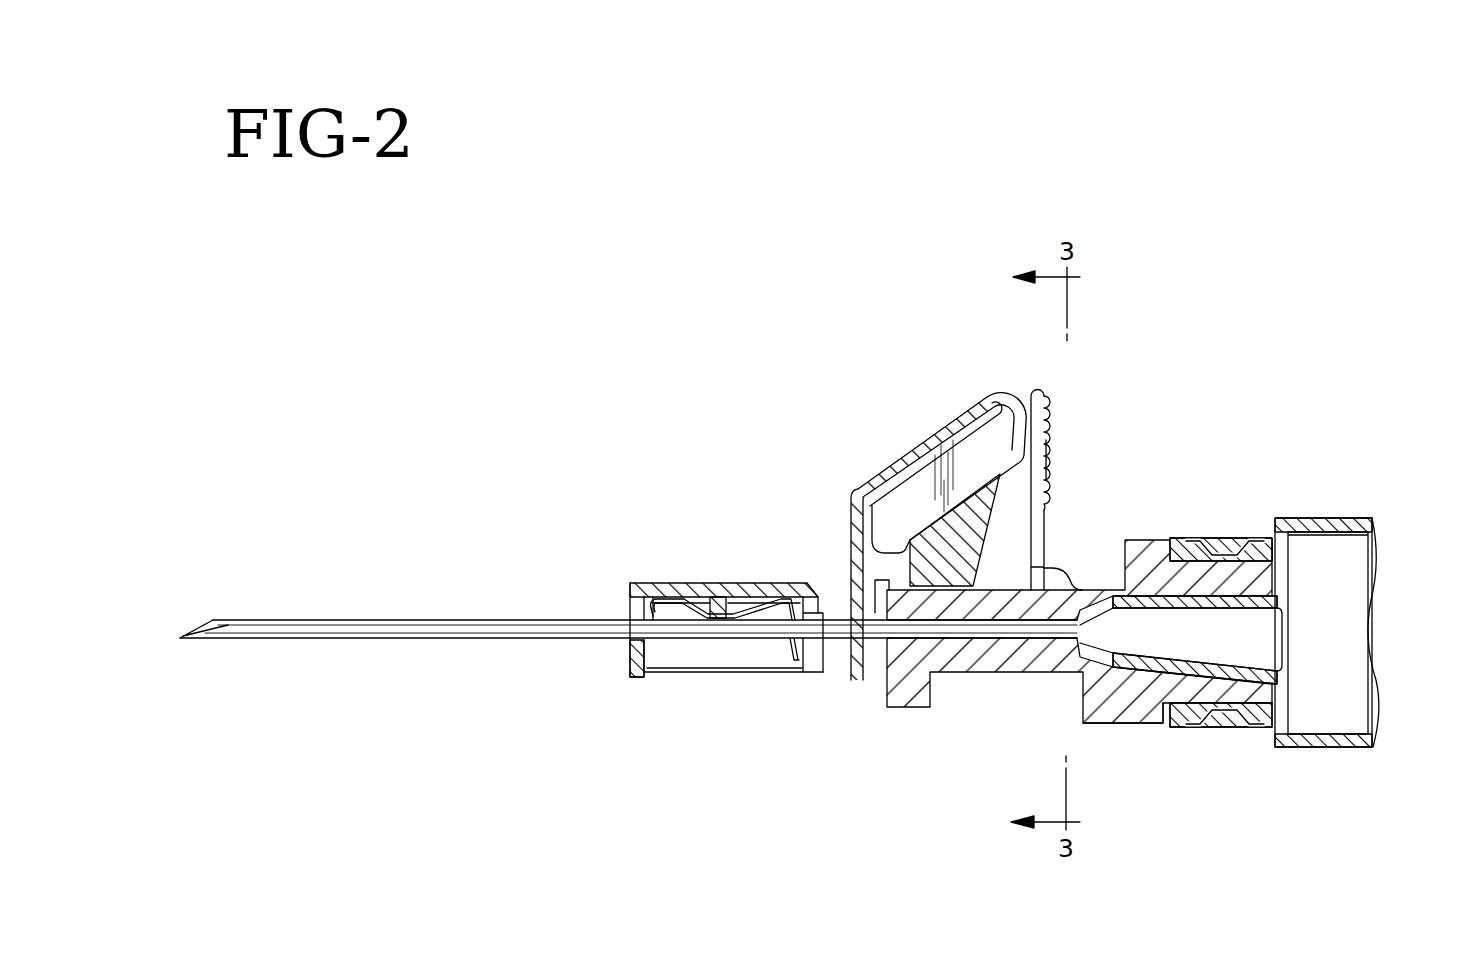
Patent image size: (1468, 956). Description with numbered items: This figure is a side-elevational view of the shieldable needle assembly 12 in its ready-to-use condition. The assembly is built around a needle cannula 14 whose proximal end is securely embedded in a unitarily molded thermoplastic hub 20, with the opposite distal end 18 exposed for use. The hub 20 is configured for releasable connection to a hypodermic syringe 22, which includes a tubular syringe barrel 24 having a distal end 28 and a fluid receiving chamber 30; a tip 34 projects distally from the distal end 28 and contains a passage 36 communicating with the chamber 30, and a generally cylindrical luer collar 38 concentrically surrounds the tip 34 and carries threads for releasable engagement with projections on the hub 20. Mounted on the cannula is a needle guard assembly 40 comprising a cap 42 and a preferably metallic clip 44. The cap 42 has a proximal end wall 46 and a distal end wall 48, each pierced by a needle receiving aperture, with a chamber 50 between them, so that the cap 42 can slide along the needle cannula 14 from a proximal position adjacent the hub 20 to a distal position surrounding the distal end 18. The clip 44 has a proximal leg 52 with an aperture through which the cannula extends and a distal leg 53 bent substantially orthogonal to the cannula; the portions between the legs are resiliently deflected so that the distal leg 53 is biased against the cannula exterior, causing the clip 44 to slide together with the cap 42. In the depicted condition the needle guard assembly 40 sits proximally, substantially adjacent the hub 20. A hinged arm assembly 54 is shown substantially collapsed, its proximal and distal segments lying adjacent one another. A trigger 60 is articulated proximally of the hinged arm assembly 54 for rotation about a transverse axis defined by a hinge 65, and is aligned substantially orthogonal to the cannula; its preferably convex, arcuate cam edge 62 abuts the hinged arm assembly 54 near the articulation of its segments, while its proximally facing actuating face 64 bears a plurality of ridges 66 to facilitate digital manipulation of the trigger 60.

The shieldable needle assembly 12 is at (450, 350).
The needle cannula 14 is at (375, 630).
The distal end of needle cannula 18 is at (182, 637).
The hub 20 is at (1032, 680).
The hypodermic syringe 22 is at (1284, 505).
The syringe barrel 24 is at (1355, 518).
The distal end of syringe barrel 28 is at (1283, 750).
The fluid receiving chamber 30 is at (1345, 737).
The tip 34 is at (1147, 662).
The passage 36 is at (1150, 633).
The luer collar 38 is at (1212, 538).
The needle guard assembly 40 is at (725, 568).
The cap 42 is at (775, 590).
The clip 44 is at (680, 600).
The proximal end wall 46 is at (817, 582).
The distal end wall 48 is at (628, 585).
The chamber 50 is at (660, 665).
The proximal leg 52 is at (792, 650).
The distal leg 53 is at (660, 612).
The hinged arm assembly 54 is at (912, 430).
The trigger 60 is at (1060, 388).
The cam edge 62 is at (1030, 392).
The actuating face 64 is at (1050, 428).
The hinge 65 is at (1047, 578).
The ridges 66 is at (1052, 472).